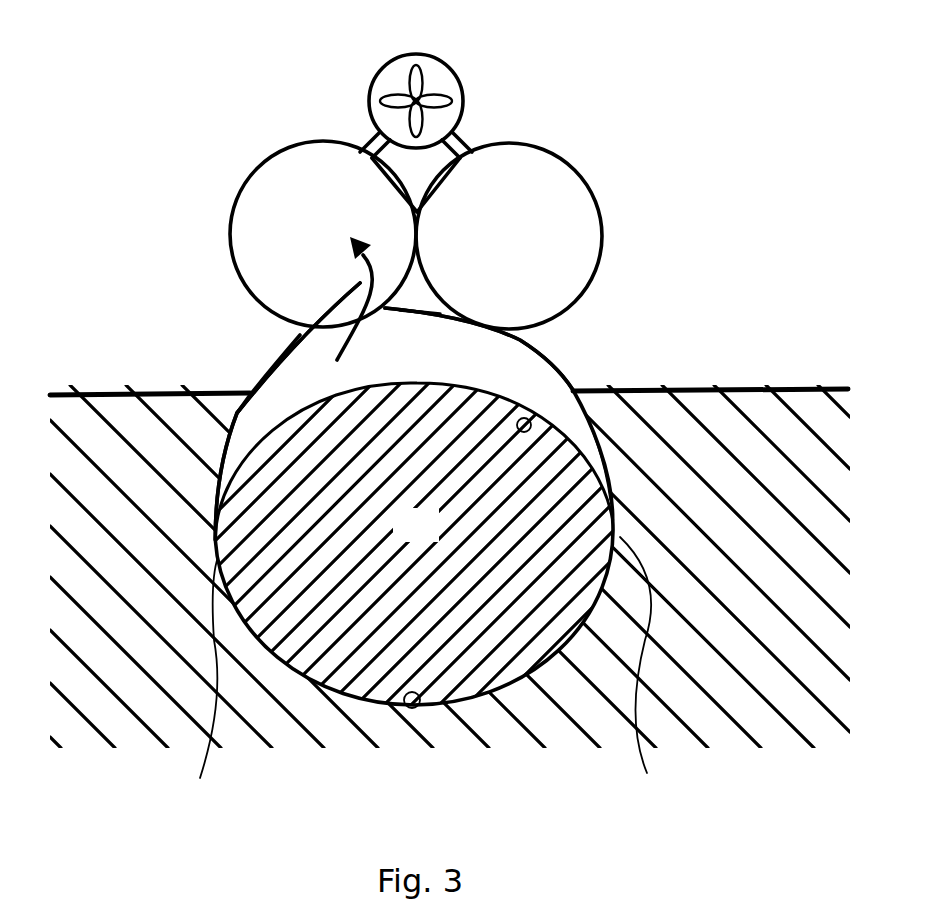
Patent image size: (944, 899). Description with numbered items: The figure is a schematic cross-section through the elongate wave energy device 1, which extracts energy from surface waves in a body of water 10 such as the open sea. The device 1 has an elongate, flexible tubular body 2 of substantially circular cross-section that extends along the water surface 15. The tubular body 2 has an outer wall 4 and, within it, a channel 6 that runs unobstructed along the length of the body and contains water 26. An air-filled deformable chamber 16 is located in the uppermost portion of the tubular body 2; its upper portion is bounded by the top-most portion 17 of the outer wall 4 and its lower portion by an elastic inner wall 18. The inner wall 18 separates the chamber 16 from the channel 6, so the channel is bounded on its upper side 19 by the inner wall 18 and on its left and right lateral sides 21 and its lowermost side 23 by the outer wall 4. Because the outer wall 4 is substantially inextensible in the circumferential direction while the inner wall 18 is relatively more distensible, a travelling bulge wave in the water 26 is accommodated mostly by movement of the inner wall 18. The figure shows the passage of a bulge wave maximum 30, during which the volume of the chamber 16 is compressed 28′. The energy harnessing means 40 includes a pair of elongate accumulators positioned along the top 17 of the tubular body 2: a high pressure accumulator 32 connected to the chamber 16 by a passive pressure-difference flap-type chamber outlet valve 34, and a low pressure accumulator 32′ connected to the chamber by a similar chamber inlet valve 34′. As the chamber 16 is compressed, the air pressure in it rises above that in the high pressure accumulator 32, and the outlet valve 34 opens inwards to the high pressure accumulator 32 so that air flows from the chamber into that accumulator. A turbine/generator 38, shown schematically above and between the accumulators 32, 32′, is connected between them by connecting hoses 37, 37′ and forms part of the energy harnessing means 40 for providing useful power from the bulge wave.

The wave energy device 1 is at (200, 150).
The tubular body 2 is at (283, 347).
The outer wall 4 is at (280, 357).
The channel 6 is at (340, 650).
The body of water 10 is at (782, 383).
The water surface 15 is at (818, 384).
The air-filled deformable chamber 16 is at (290, 397).
The top-most portion of the outer wall 17 is at (415, 314).
The elastic inner wall 18 is at (565, 430).
The upper side of the channel 19 is at (547, 418).
The lateral sides of the channel 21 is at (426, 671).
The lowermost side of the channel 23 is at (404, 708).
The water 26 is at (432, 540).
The compressed chamber volume 28′ is at (470, 378).
The bulge wave maximum 30 is at (485, 665).
The high pressure accumulator 32 is at (290, 147).
The low pressure accumulator 32′ is at (568, 163).
The chamber outlet valve 34 is at (348, 298).
The chamber inlet valve 34′ is at (475, 318).
The connecting hose 37 is at (368, 133).
The connecting hose 37′ is at (465, 138).
The turbine/generator 38 is at (388, 72).
The energy harnessing means 40 is at (482, 84).